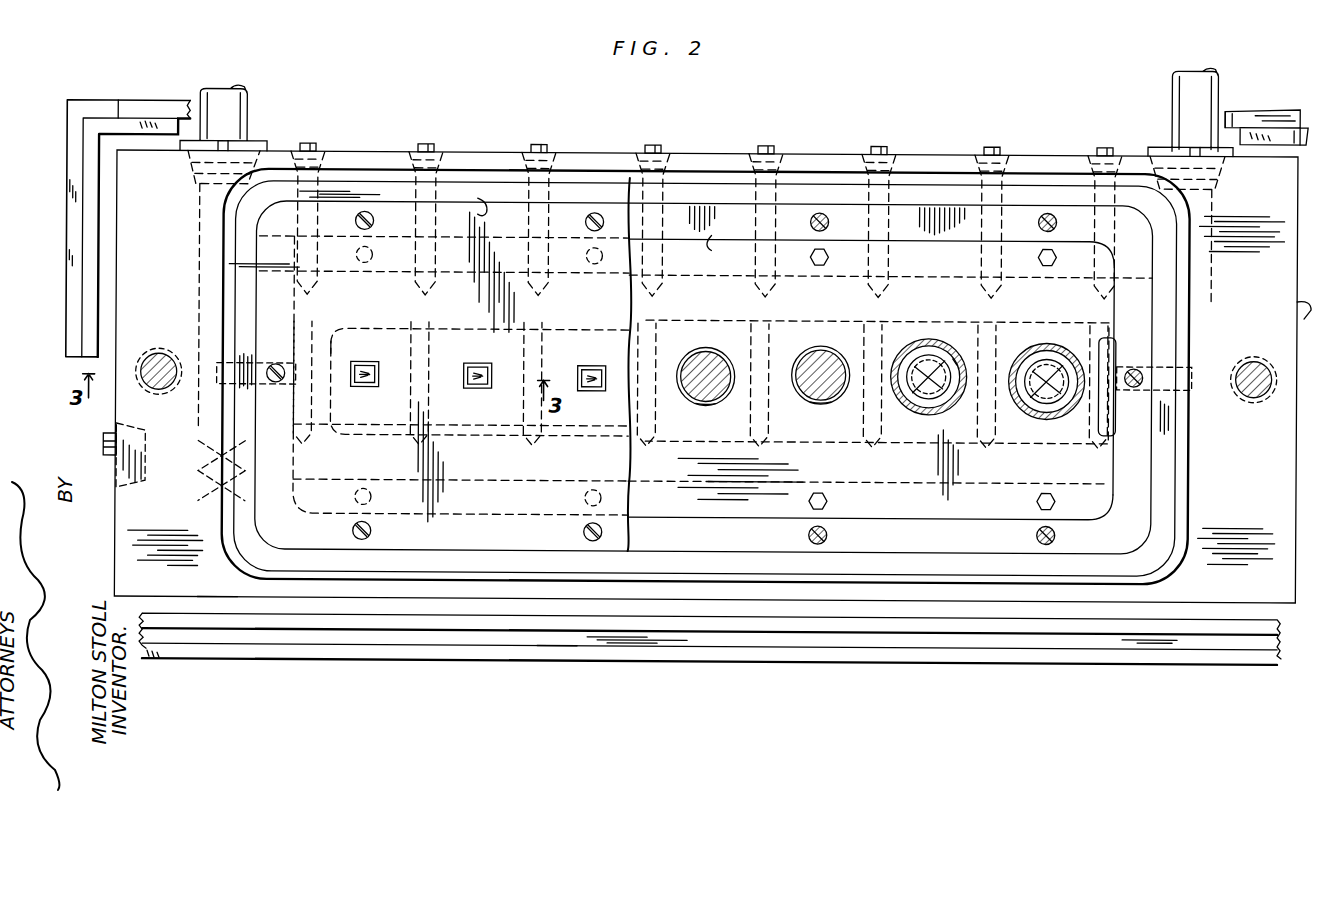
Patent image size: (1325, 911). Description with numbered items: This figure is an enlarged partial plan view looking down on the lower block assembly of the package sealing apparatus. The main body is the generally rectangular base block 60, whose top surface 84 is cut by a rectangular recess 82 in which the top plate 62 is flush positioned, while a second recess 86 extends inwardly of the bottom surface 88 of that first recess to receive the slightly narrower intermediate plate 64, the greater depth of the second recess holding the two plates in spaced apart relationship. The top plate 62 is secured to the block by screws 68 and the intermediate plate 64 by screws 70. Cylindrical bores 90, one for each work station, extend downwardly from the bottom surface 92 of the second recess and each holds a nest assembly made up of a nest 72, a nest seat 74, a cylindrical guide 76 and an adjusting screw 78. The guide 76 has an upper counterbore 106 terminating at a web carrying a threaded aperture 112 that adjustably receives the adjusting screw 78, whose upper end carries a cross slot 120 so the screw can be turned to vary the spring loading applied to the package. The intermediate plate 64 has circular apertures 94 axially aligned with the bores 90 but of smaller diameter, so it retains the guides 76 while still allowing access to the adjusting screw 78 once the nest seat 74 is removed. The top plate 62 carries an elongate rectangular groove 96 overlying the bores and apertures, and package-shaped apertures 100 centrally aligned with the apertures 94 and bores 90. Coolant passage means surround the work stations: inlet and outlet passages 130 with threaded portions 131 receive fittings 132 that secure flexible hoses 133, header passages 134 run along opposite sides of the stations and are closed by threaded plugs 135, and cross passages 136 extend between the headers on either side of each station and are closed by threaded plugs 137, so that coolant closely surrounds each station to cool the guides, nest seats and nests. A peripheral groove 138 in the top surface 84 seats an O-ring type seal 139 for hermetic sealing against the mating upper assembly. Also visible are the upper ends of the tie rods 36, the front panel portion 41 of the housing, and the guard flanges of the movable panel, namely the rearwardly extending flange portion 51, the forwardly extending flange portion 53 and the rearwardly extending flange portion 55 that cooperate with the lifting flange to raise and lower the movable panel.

The tie rods 36 is at (163, 356).
The front panel portion 41 is at (130, 110).
The rearwardly extending flange portion 51 is at (115, 125).
The forwardly extending flange portion 53 is at (70, 224).
The rearwardly extending flange portion 55 is at (555, 642).
The base block 60 is at (220, 598).
The top plate 62 is at (489, 471).
The intermediate plate 64 is at (824, 467).
The screws 68 is at (375, 222).
The screws 70 is at (830, 252).
The nest 72 is at (472, 360).
The nest seat 74 is at (703, 396).
The guide 76 is at (925, 350).
The adjusting screw 78 is at (915, 368).
The rectangular recess 82 is at (470, 198).
The top surface 84 is at (143, 211).
The second recess 86 is at (727, 231).
The bottom surface 88 is at (669, 538).
The bores 90 is at (913, 345).
The bottom surface 92 is at (934, 259).
The circular apertures 94 is at (687, 358).
The rectangular groove 96 is at (329, 349).
The apertures 100 is at (370, 366).
The counterbore 106 is at (926, 405).
The threaded aperture 112 is at (955, 355).
The cross slot 120 is at (950, 398).
The inlet and outlet passages 130 is at (205, 235).
The threaded portions 131 is at (272, 162).
The fittings 132 is at (260, 155).
The flexible hoses 133 is at (187, 115).
The header passages 134 is at (568, 249).
The threaded plugs 135 is at (105, 446).
The cross passages 136 is at (320, 294).
The threaded plugs 137 is at (418, 142).
The peripheral groove 138 is at (710, 166).
The O-ring type seal 139 is at (470, 176).